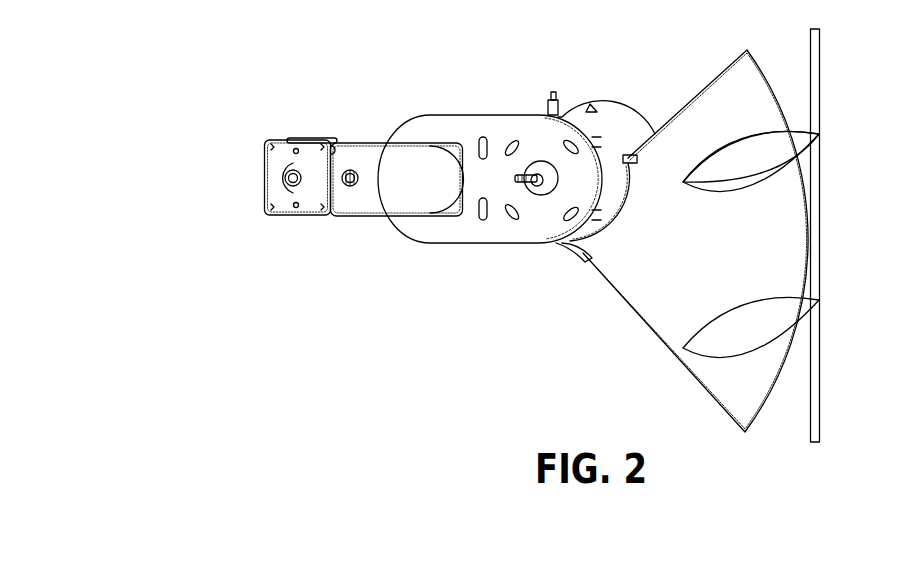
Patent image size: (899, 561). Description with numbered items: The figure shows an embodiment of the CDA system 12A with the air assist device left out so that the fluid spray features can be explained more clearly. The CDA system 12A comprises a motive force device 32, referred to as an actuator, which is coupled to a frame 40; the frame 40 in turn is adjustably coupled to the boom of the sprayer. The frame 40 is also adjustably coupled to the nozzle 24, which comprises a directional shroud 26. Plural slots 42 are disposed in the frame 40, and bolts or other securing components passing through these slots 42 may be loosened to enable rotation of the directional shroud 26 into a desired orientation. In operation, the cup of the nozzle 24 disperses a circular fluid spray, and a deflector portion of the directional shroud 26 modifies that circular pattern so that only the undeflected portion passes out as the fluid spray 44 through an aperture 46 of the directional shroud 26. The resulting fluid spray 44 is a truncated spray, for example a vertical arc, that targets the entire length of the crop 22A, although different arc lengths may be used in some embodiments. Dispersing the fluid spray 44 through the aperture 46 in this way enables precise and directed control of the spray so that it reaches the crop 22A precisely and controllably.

The CDA system 12A is at (279, 73).
The crop 22A is at (820, 65).
The nozzle 24 is at (651, 96).
The directional shroud 26 is at (584, 103).
The motive force device 32 is at (338, 216).
The frame 40 is at (460, 243).
The slots 42 is at (528, 238).
The fluid spray 44 is at (697, 95).
The aperture 46 is at (631, 231).